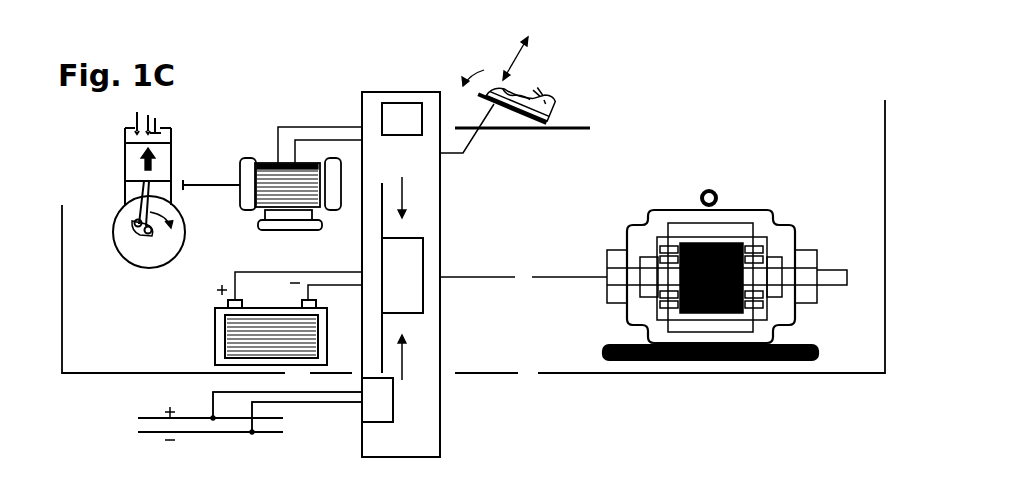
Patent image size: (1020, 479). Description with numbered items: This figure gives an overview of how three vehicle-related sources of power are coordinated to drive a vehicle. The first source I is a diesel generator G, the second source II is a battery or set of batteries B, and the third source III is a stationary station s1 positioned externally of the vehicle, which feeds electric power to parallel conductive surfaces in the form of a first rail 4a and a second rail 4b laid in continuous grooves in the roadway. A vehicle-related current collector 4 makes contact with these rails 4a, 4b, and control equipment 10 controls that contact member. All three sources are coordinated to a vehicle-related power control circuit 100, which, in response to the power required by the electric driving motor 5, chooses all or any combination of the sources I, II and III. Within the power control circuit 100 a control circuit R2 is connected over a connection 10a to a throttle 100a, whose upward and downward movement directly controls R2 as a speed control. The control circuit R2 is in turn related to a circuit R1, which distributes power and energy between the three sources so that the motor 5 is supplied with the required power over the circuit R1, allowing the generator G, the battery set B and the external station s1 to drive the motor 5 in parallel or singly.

The throttle 100a is at (506, 77).
The connection 10a is at (463, 156).
The electric driving motor 5 is at (737, 210).
The control circuit R2 is at (392, 111).
The energy distributing circuit R1 is at (407, 290).
The control equipment 10 is at (382, 405).
The power control circuit 100 is at (430, 445).
The first vehicle related power source I is at (176, 189).
The diesel generator G is at (270, 230).
The second vehicle related power source II is at (232, 329).
The battery set B is at (221, 349).
The third power source III is at (178, 421).
The stationary station s1 is at (176, 431).
The first rail 4a is at (237, 399).
The current collector 4 is at (256, 405).
The second rail 4b is at (269, 406).